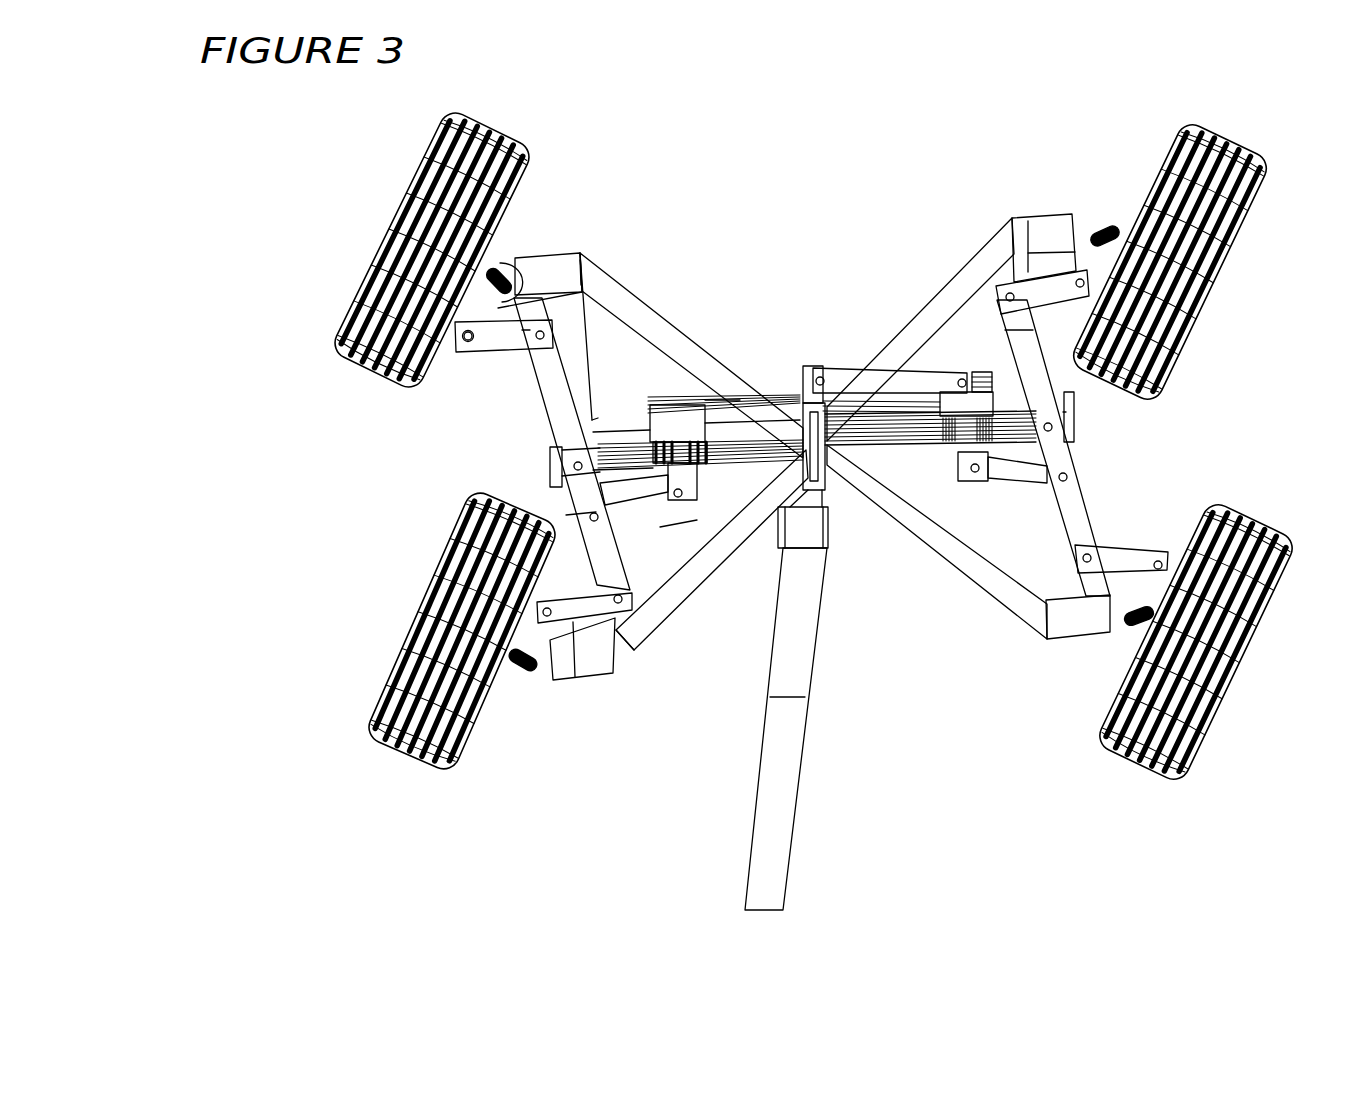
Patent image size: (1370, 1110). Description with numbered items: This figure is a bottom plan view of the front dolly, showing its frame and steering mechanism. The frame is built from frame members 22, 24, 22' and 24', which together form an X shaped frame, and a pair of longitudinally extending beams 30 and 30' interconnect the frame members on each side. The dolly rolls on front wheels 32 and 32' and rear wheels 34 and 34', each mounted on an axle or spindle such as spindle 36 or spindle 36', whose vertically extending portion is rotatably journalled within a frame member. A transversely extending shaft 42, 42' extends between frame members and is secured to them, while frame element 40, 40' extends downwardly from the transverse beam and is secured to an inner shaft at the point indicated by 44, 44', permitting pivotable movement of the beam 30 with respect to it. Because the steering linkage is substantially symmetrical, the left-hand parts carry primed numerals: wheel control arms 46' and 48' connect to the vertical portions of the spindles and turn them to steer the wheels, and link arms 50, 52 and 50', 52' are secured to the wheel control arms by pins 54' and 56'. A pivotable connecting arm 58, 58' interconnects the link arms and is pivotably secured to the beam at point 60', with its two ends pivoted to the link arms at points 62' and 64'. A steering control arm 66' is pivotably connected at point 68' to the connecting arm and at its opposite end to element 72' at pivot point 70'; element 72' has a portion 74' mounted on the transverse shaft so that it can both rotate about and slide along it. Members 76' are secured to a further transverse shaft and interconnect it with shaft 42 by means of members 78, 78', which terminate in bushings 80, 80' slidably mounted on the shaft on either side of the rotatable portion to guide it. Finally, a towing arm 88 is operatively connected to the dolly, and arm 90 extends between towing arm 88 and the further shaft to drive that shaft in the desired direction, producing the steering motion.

The frame member 22 is at (920, 329).
The frame member 22' is at (691, 355).
The frame member 24 is at (937, 542).
The frame member 24' is at (712, 550).
The longitudinally extending beam 30 is at (1053, 469).
The longitudinally extending beam 30' is at (601, 421).
The front wheel 32 is at (1228, 641).
The front wheel 32' is at (462, 665).
The rear wheel 34 is at (1200, 256).
The rear wheel 34' is at (442, 233).
The spindle 36 is at (1111, 457).
The spindle 36' is at (524, 476).
The frame element 40 is at (996, 433).
The frame element 40' is at (641, 450).
The transversely extending shaft 42 is at (907, 451).
The transversely extending shaft 42' is at (761, 482).
The securing point of frame element to inner shaft 44 is at (1138, 417).
The securing point of frame element to inner shaft 44' is at (517, 467).
The wheel control arm 46' is at (581, 655).
The wheel control arm 48' is at (547, 262).
The link arm 50 is at (1136, 533).
The link arm 50' is at (601, 656).
The link arm 52 is at (1025, 251).
The link arm 52' is at (504, 359).
The pin 54' is at (588, 678).
The pin 56' is at (451, 365).
The pivotable connecting arm 58 is at (1078, 420).
The pivotable connecting arm 58' is at (479, 392).
The pivot point 60' is at (613, 400).
The pivot point 62' is at (664, 657).
The pivot point 64' is at (615, 248).
The steering control arm 66' is at (634, 519).
The pivot point 68' is at (491, 501).
The pivot point 70' is at (675, 514).
The element 72' is at (712, 558).
The portion of element 74' is at (708, 484).
The member 76' is at (725, 386).
The member 78 is at (966, 372).
The member 78' is at (734, 338).
The bushing 80 is at (1001, 481).
The bushing 80' is at (671, 399).
The towing arm 88 is at (807, 367).
The arm 90 is at (835, 375).